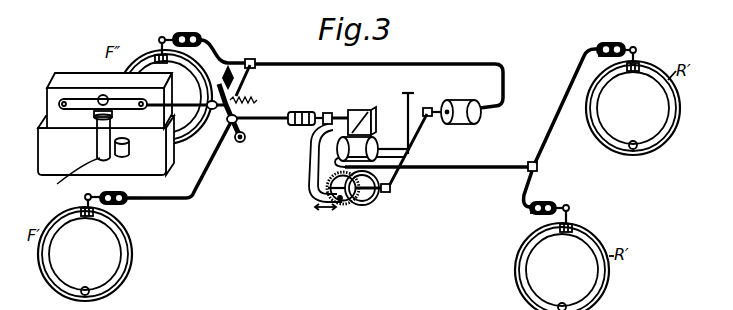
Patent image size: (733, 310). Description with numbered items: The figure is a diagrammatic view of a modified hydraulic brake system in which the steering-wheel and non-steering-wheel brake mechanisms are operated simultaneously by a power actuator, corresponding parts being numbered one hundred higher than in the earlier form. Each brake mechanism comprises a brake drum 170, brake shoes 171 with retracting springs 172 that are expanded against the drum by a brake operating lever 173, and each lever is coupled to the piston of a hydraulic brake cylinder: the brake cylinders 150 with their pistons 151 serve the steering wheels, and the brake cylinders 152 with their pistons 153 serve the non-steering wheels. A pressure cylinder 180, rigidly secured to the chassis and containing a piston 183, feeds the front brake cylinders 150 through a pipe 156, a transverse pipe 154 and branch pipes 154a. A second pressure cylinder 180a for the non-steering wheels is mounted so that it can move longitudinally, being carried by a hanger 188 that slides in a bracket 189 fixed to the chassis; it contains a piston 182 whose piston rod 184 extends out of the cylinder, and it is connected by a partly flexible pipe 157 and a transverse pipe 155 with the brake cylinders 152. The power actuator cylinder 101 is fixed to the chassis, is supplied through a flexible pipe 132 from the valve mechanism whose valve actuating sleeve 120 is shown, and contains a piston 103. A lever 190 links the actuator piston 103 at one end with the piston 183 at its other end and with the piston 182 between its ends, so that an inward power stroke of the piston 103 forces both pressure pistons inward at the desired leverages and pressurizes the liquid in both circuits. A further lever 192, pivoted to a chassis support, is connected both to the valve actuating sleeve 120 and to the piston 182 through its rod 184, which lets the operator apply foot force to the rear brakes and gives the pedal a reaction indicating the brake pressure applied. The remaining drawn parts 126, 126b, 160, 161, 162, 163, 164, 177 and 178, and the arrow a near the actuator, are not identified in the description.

The power actuator cylinder 101 is at (343, 205).
The actuator piston 103 is at (370, 197).
The valve actuating sleeve 120 is at (318, 112).
The connecting rod 126 is at (263, 112).
The rod fitting 126b is at (207, 110).
The flexible pipe 132 is at (310, 181).
The brake cylinder 150 is at (193, 25).
The brake cylinder piston 151 is at (145, 192).
The brake cylinder 152 is at (612, 36).
The brake cylinder piston 153 is at (606, 58).
The transverse pipe 154 is at (204, 177).
The branch pipe 154a is at (238, 53).
The transverse pipe 155 is at (550, 128).
The pipe 156 is at (449, 57).
The flexible pipe 157 is at (452, 170).
The tank 160 is at (38, 151).
The tube 161 is at (64, 183).
The reservoir slot lever 162 is at (76, 99).
The cylinder 163 is at (136, 154).
The pump 164 is at (98, 143).
The brake drum 170 is at (130, 252).
The brake shoes 171 is at (118, 265).
The retracting springs 172 is at (87, 221).
The brake operating lever 173 is at (159, 38).
The lever 177 is at (246, 137).
The spring 178 is at (260, 99).
The pressure cylinder 180 is at (461, 97).
The pressure cylinder 180a is at (407, 100).
The piston 182 is at (383, 139).
The piston 183 is at (426, 107).
The piston rod 184 is at (411, 151).
The hanger 188 is at (366, 110).
The bracket 189 is at (340, 104).
The lever 190 is at (399, 180).
The lever 192 is at (420, 122).
The direction of movement a is at (325, 215).